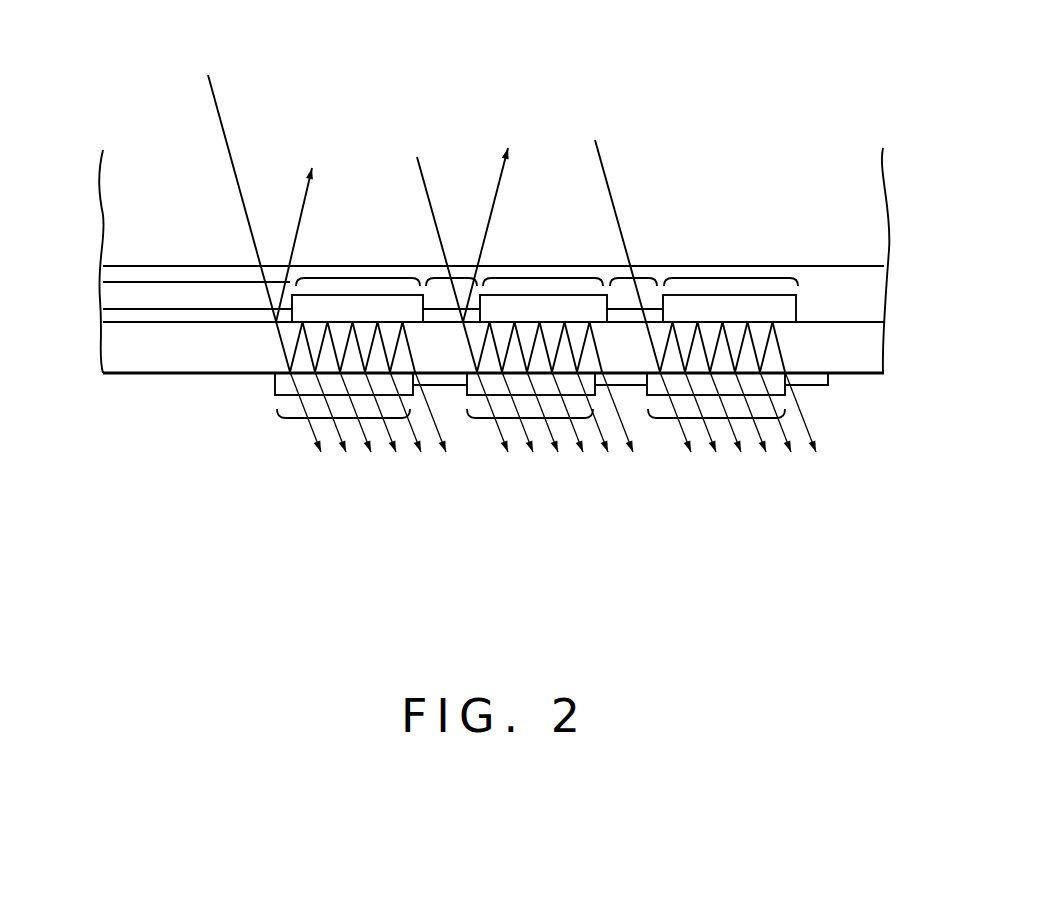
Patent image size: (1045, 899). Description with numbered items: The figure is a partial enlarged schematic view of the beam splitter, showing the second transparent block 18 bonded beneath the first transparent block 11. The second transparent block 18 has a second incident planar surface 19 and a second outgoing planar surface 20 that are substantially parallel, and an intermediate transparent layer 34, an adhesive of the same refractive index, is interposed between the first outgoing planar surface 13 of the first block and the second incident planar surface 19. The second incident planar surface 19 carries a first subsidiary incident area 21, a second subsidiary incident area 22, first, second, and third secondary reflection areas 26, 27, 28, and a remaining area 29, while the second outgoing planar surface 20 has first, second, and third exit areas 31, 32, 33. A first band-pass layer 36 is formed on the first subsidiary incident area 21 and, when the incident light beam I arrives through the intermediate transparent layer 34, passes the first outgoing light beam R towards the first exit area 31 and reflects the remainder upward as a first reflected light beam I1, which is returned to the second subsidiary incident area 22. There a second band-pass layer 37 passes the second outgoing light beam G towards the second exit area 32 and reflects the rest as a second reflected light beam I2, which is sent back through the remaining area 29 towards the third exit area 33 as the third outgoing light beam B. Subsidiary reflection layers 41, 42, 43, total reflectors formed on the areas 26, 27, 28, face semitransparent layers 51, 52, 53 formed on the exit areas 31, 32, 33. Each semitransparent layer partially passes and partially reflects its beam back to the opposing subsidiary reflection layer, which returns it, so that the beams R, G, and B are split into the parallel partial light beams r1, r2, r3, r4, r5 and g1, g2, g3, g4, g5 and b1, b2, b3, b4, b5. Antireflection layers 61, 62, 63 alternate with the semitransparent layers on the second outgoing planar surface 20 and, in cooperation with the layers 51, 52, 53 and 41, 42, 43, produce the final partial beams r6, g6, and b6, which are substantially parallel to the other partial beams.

The first transparent block 11 is at (112, 243).
The first outgoing planar surface 13 is at (818, 268).
The second transparent block 18 is at (177, 362).
The second incident planar surface 19 is at (845, 318).
The second outgoing planar surface 20 is at (116, 376).
The first subsidiary incident area 21 is at (164, 282).
The second subsidiary incident area 22 is at (450, 305).
The first secondary reflection area 26 is at (368, 278).
The second secondary reflection area 27 is at (543, 278).
The third secondary reflection area 28 is at (730, 278).
The remaining area 29 is at (636, 278).
The first exit area 31 is at (337, 419).
The second exit area 32 is at (532, 419).
The third exit area 33 is at (775, 419).
The intermediate transparent layer 34 is at (850, 283).
The first band-pass layer 36 is at (220, 308).
The second band-pass layer 37 is at (434, 306).
The first subsidiary reflection layer 41 is at (323, 294).
The second subsidiary reflection layer 42 is at (567, 294).
The third subsidiary reflection layer 43 is at (760, 294).
The first semitransparent layer 51 is at (276, 405).
The second semitransparent layer 52 is at (483, 396).
The third semitransparent layer 53 is at (700, 405).
The first antireflection layer 61 is at (452, 388).
The second antireflection layer 62 is at (645, 388).
The third antireflection layer 63 is at (818, 387).
The first outgoing light beam R is at (275, 348).
The second outgoing light beam G is at (465, 352).
The third outgoing light beam B is at (653, 352).
The incident light beam I is at (221, 119).
The first reflected light beam I1 is at (318, 180).
The second reflected light beam I2 is at (505, 188).
The partial light beam r1 is at (321, 452).
The partial light beam r2 is at (346, 452).
The partial light beam r3 is at (371, 452).
The partial light beam r4 is at (396, 452).
The partial light beam r5 is at (421, 452).
The partial light beam r6 is at (446, 452).
The partial light beam g1 is at (508, 452).
The partial light beam g2 is at (533, 452).
The partial light beam g3 is at (558, 452).
The partial light beam g4 is at (583, 452).
The partial light beam g5 is at (608, 452).
The partial light beam g6 is at (633, 452).
The partial light beam b1 is at (691, 452).
The partial light beam b2 is at (716, 452).
The partial light beam b3 is at (741, 452).
The partial light beam b4 is at (766, 452).
The partial light beam b5 is at (791, 452).
The partial light beam b6 is at (816, 452).